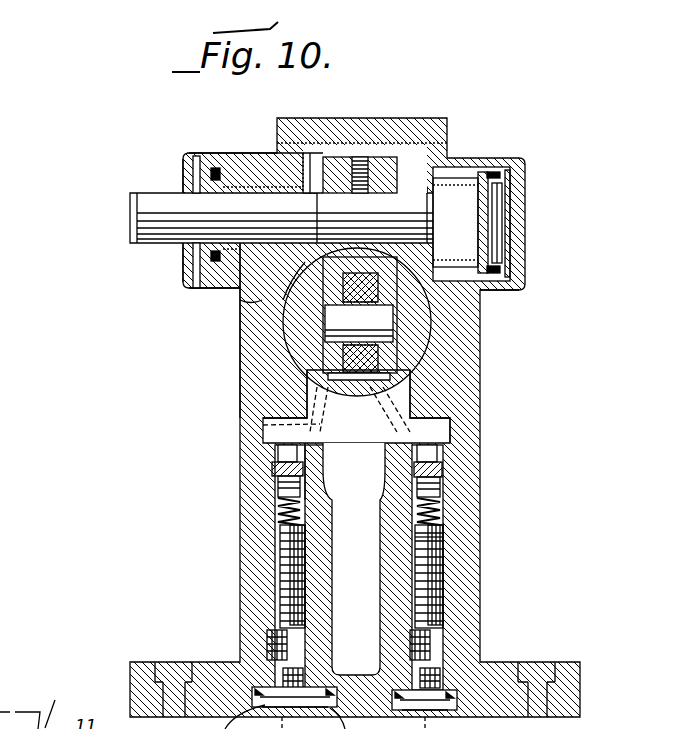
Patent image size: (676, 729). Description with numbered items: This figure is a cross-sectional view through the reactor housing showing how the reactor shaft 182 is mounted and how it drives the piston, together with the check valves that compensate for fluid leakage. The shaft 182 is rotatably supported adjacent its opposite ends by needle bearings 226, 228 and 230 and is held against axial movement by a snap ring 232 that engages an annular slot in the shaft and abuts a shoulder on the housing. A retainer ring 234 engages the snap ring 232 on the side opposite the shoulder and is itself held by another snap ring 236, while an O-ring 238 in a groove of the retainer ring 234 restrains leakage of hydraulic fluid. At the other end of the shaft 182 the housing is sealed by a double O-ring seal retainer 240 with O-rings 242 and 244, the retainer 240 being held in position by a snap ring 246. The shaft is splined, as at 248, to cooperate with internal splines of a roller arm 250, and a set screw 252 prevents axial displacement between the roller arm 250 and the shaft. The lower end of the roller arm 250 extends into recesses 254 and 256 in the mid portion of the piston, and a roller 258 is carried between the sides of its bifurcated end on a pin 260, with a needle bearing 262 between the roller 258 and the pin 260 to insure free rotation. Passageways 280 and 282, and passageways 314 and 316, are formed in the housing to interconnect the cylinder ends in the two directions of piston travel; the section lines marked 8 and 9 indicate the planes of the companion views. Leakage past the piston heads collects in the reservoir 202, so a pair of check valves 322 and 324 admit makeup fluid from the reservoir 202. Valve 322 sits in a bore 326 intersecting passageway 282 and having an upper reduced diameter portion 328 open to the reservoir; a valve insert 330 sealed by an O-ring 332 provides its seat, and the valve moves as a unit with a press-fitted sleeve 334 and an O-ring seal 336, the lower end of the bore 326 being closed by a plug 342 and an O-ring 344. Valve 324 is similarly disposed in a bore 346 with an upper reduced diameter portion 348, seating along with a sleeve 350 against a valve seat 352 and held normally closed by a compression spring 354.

The reactor shaft 182 is at (152, 204).
The reservoir 202 is at (340, 510).
The needle bearing 226 is at (233, 288).
The needle bearing 228 is at (243, 310).
The needle bearing 230 is at (480, 307).
The snap ring 232 is at (486, 177).
The retainer ring 234 is at (500, 200).
The snap ring 236 is at (502, 268).
The O-ring 238 is at (505, 292).
The double O-ring seal retainer 240 is at (203, 181).
The O-ring 242 is at (190, 255).
The O-ring 244 is at (212, 290).
The snap ring 246 is at (203, 257).
The splines 248 is at (420, 195).
The roller arm 250 is at (277, 153).
The set screw 252 is at (365, 160).
The recess 254 is at (280, 312).
The recess 256 is at (313, 383).
The roller 258 is at (307, 404).
The pin 260 is at (380, 330).
The needle bearing 262 is at (395, 387).
The passageway 280 is at (263, 425).
The passageway 282 is at (275, 518).
The passageway 314 is at (445, 518).
The passageway 316 is at (400, 399).
The check valve 322 is at (282, 486).
The check valve 324 is at (438, 485).
The bore 326 is at (272, 545).
The upper reduced diameter portion 328 is at (278, 457).
The valve insert 330 is at (273, 470).
The O-ring 332 is at (325, 458).
The press-fitted sleeve 334 is at (310, 487).
The O-ring seal 336 is at (318, 470).
The plug 342 is at (402, 709).
The O-ring 344 is at (284, 708).
The bore 346 is at (442, 567).
The upper reduced diameter portion 348 is at (432, 428).
The sleeve 350 is at (433, 469).
The valve seat 352 is at (430, 463).
The compression spring 354 is at (442, 537).
The section line 8 is at (380, 91).
The section line 9 is at (371, 314).